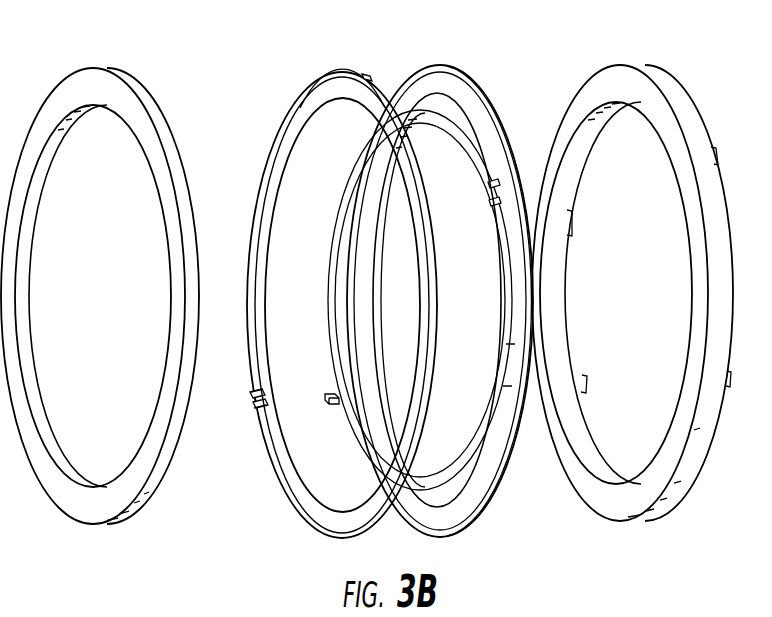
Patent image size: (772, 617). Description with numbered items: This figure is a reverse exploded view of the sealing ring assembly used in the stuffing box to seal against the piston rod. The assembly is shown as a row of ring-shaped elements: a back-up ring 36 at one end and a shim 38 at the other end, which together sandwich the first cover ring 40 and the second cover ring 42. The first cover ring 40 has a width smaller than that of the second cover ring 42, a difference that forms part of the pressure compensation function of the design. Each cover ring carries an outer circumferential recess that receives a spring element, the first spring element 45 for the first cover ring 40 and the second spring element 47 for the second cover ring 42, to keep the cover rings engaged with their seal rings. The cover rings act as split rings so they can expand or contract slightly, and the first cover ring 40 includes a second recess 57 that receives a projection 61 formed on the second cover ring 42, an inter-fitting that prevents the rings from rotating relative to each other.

The back-up ring 36 is at (70, 508).
The shim 38 is at (667, 500).
The first cover ring 40 is at (293, 118).
The second cover ring 42 is at (502, 126).
The first spring element 45 is at (349, 72).
The second spring element 47 is at (396, 255).
The second recess 57 is at (250, 400).
The projection 61 is at (320, 395).